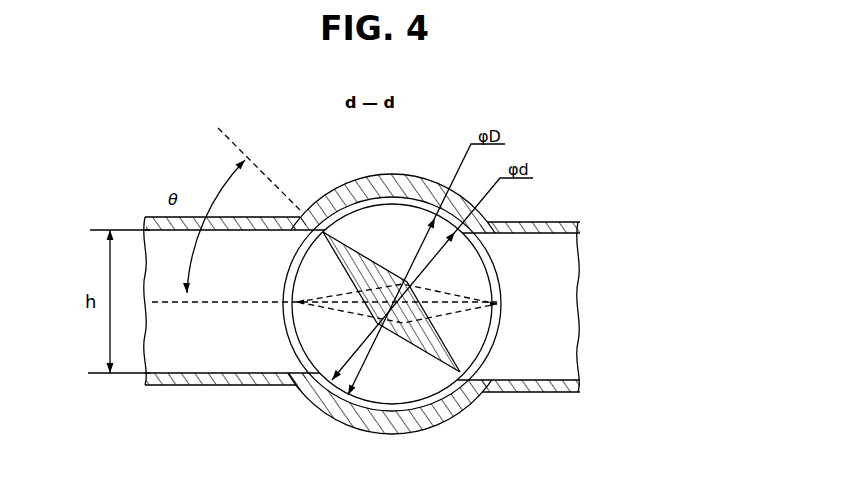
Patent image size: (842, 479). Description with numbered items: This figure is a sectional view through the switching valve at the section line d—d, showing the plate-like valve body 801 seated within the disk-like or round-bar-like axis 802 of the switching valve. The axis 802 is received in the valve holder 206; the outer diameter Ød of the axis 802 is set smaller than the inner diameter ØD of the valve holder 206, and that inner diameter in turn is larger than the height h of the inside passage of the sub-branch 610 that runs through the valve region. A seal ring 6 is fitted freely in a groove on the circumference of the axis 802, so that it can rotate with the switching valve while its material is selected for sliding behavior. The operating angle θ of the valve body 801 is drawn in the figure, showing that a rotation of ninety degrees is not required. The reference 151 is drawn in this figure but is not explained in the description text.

The valve holder 206 is at (328, 196).
The axis 802 is at (487, 251).
The outlet pipe 151 is at (503, 305).
The sub-branch 610 is at (207, 360).
The seal ring 6 is at (289, 362).
The valve body 801 is at (407, 333).